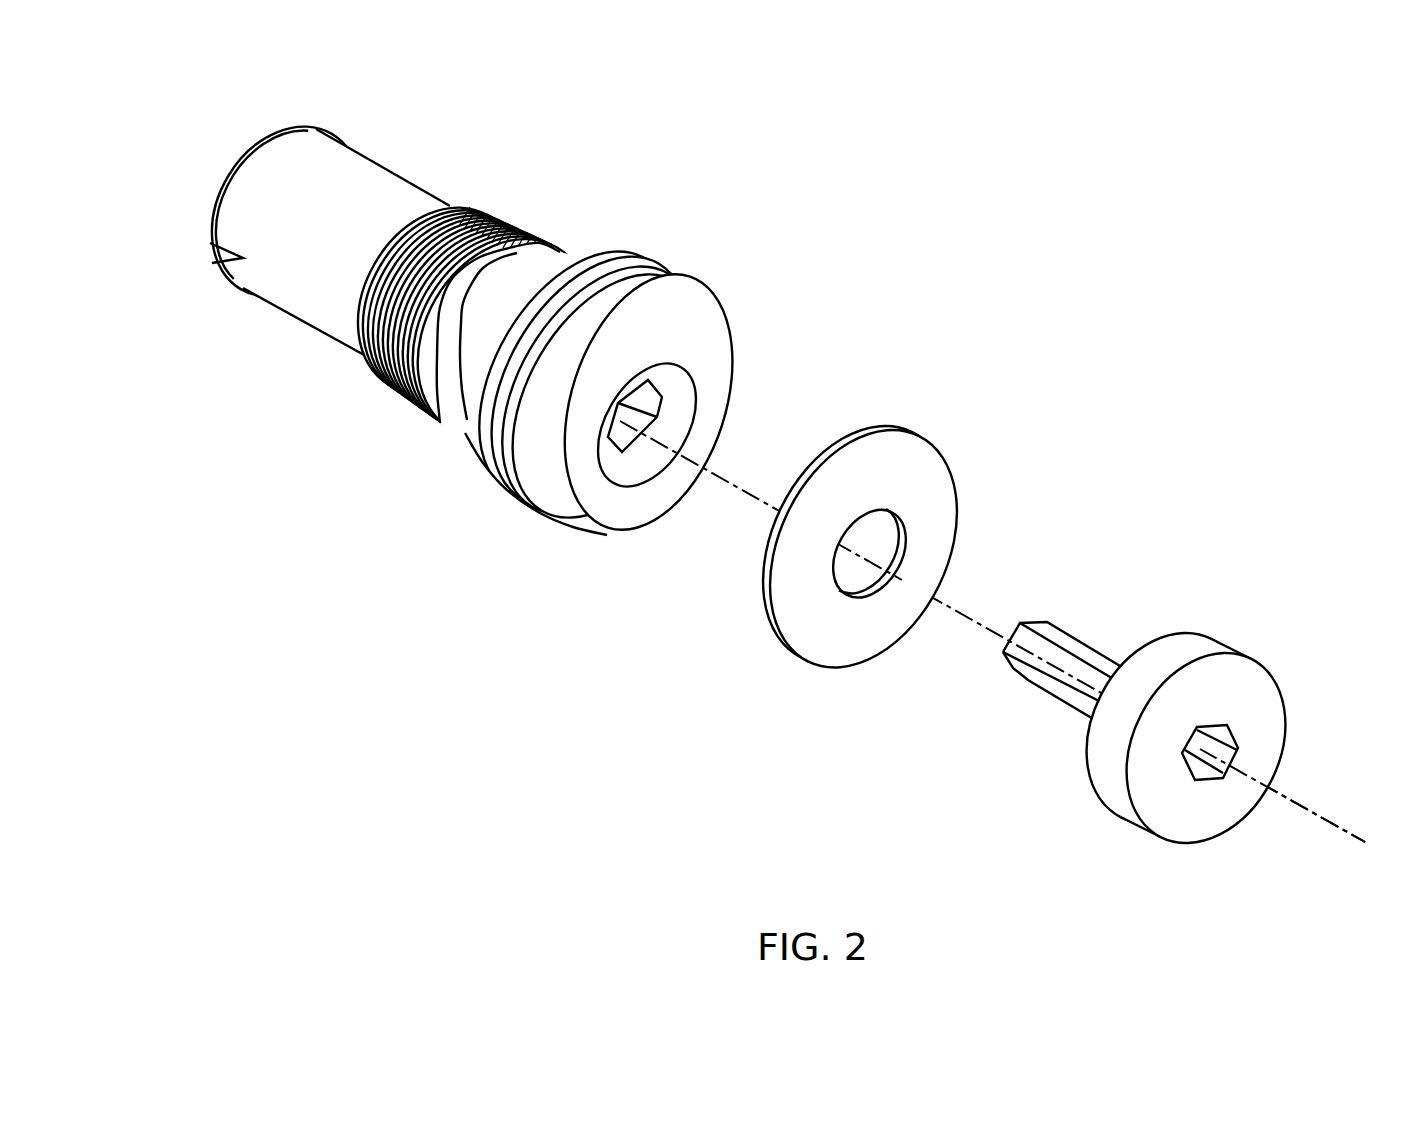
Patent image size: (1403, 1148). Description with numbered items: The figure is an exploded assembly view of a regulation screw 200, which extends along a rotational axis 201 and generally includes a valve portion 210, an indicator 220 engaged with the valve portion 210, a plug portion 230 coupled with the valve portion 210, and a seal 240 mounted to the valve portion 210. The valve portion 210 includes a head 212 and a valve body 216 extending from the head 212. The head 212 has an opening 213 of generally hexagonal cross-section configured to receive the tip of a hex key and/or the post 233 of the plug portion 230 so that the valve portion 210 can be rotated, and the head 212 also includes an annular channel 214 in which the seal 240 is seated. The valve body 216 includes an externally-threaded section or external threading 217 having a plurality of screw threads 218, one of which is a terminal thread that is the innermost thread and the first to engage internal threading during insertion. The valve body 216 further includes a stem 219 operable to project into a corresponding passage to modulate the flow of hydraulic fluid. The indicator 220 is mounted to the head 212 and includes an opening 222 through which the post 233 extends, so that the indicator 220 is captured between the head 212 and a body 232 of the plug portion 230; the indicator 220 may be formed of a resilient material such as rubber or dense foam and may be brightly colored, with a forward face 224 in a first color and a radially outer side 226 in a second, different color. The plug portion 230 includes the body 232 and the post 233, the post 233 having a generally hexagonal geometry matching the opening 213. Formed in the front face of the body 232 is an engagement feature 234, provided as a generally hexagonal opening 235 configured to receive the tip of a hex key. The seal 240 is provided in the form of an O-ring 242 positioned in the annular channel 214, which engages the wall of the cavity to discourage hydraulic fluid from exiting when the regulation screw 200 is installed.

The regulation screw 200 is at (889, 116).
The rotational axis 201 is at (1326, 826).
The valve portion 210 is at (606, 170).
The head 212 is at (524, 373).
The opening 213 is at (624, 431).
The annular channel 214 is at (609, 287).
The valve body 216 is at (518, 335).
The external threading 217 is at (475, 292).
The screw threads 218 is at (530, 236).
The stem 219 is at (243, 297).
The indicator 220 is at (860, 487).
The opening 222 is at (856, 571).
The forward face 224 is at (944, 473).
The radially outer side 226 is at (832, 449).
The plug portion 230 is at (1184, 660).
The body 232 is at (1186, 728).
The post 233 is at (1025, 688).
The engagement feature 234 is at (1178, 777).
The opening 235 is at (1214, 763).
The seal 240 is at (670, 206).
The O-ring 242 is at (592, 383).